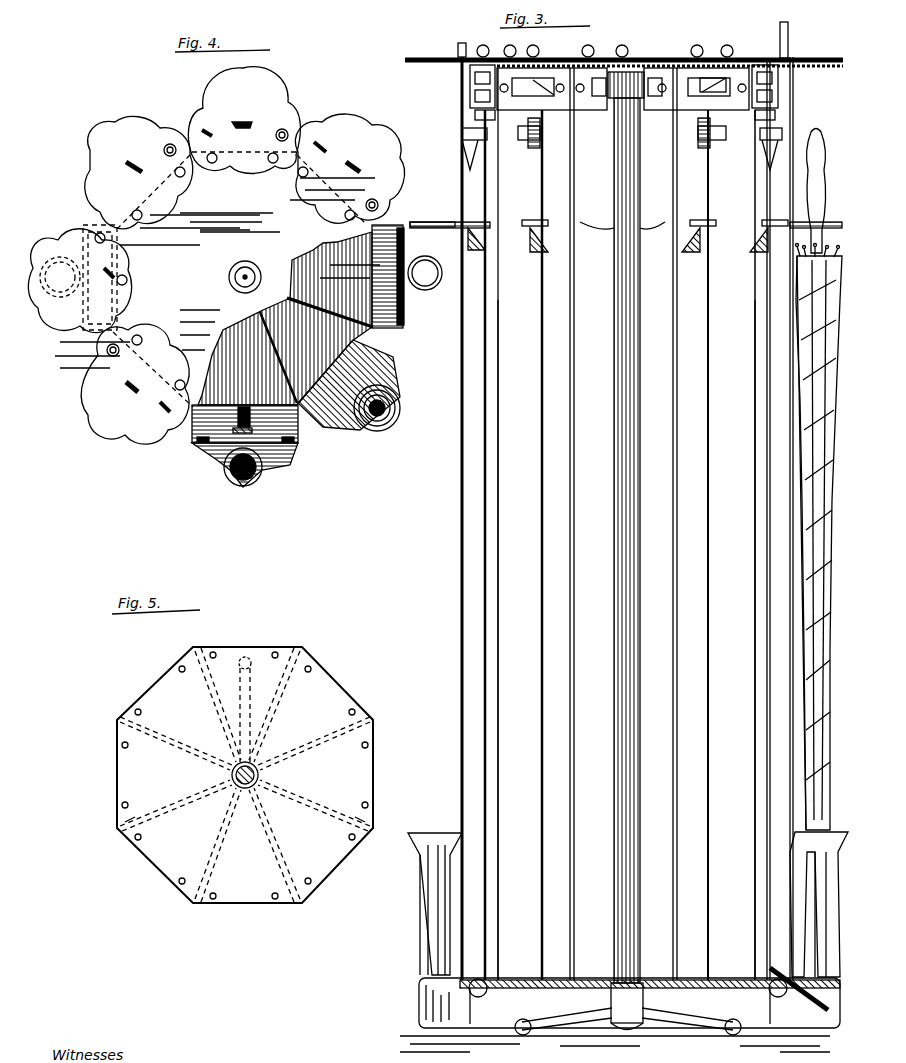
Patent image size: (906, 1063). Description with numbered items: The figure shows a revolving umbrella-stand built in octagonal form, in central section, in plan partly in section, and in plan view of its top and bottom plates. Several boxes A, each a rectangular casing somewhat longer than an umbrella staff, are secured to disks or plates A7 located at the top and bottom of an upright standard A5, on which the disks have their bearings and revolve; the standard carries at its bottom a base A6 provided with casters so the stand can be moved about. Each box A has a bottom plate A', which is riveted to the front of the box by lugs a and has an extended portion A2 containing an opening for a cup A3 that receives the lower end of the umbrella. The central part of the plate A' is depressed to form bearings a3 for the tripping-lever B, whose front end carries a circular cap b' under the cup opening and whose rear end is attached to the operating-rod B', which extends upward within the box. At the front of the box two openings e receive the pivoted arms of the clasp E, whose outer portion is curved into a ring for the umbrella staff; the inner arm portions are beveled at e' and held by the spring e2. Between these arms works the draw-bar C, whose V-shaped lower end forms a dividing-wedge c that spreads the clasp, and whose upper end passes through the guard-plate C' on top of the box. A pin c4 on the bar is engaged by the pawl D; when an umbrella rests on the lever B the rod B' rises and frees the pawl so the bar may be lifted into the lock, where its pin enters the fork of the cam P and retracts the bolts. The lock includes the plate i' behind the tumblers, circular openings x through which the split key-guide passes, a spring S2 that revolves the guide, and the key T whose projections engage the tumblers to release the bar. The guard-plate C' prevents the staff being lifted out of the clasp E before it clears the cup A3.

In FIG. 3, the guard-plate C' is at (623, 64).
In FIG. 4, the guard-plate C' is at (216, 255).
In FIG. 3, the draw-bar C is at (630, 499).
In FIG. 3, the key T is at (520, 48).
In FIG. 4, the key T is at (282, 138).
In FIG. 3, the plate i' is at (633, 95).
In FIG. 4, the plate i' is at (361, 282).
In FIG. 3, the spring S2 is at (496, 114).
In FIG. 3, the pin or projection c4 is at (466, 145).
In FIG. 3, the pawl D is at (478, 142).
In FIG. 3, the clamp or clasp E is at (426, 222).
In FIG. 4, the clamp or clasp E is at (413, 260).
In FIG. 3, the openings e is at (610, 222).
In FIG. 4, the openings e is at (425, 295).
In FIG. 3, the beveled portions e' is at (578, 233).
In FIG. 3, the spring e2 is at (536, 220).
In FIG. 3, the dividing-wedge c is at (520, 250).
In FIG. 3, the disks or plates A7 is at (640, 150).
In FIG. 4, the disks or plates A7 is at (217, 291).
In FIG. 5, the disks or plates A7 is at (245, 775).
In FIG. 3, the cam P is at (716, 92).
In FIG. 3, the circular openings x is at (778, 55).
In FIG. 4, the circular openings x is at (100, 345).
In FIG. 3, the box A is at (588, 684).
In FIG. 4, the box A is at (266, 431).
In FIG. 3, the operating-rod B' is at (627, 640).
In FIG. 3, the circular cap b' is at (807, 1007).
In FIG. 4, the circular cap b' is at (393, 406).
In FIG. 3, the cup A3 is at (424, 908).
In FIG. 3, the lugs a is at (478, 975).
In FIG. 4, the lugs a is at (228, 410).
In FIG. 3, the bearings a3 is at (480, 996).
In FIG. 5, the upright standard A5 is at (248, 790).
In FIG. 3, the base A6 is at (668, 1018).
In FIG. 5, the base A6 is at (240, 712).
In FIG. 3, the tripping-lever B is at (629, 972).
In FIG. 4, the tripping-lever B is at (349, 404).
In FIG. 3, the plate A' is at (778, 972).
In FIG. 4, the extended portion A2 is at (232, 470).